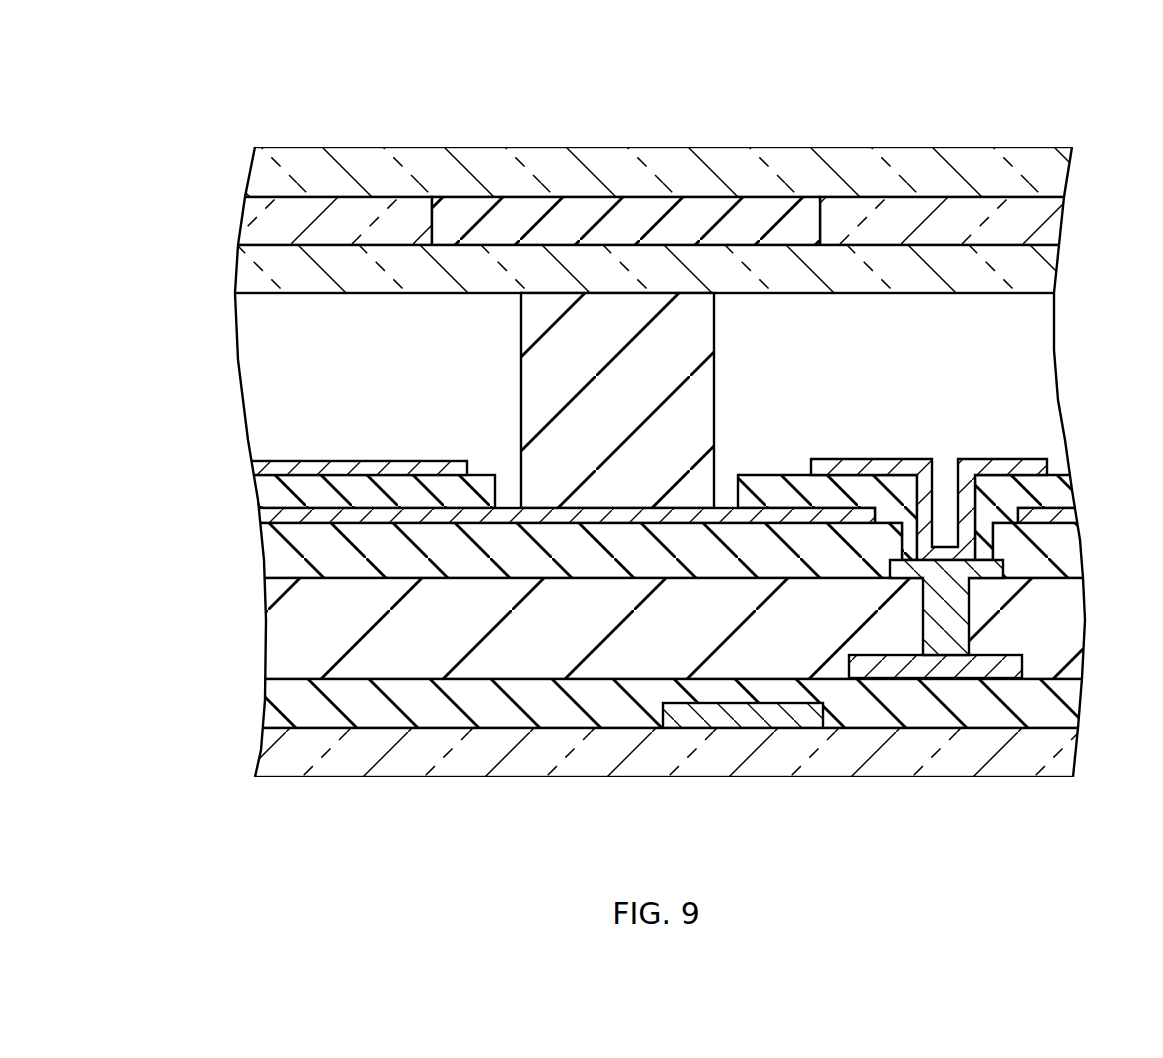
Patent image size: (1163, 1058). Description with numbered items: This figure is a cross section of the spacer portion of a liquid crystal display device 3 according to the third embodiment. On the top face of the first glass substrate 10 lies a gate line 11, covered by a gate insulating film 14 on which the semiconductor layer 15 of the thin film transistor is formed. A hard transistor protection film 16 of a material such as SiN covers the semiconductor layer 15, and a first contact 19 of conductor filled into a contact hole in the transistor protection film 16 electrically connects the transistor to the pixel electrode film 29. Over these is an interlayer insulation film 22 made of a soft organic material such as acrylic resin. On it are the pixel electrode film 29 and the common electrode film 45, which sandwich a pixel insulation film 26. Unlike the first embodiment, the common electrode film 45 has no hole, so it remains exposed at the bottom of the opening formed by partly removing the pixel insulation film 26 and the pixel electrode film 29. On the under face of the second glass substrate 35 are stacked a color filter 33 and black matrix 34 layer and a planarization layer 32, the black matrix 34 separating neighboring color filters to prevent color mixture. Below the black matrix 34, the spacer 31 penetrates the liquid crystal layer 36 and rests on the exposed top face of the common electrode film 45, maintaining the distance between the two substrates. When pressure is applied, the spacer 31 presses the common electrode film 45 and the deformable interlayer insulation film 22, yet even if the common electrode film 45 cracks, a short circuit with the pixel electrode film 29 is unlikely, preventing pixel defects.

The liquid crystal display device 3 is at (1060, 88).
The first glass substrate 10 is at (1070, 748).
The gate line 11 is at (693, 717).
The gate insulating film 14 is at (1073, 700).
The semiconductor layer 15 is at (975, 662).
The transistor protection film 16 is at (290, 617).
The first contact 19 is at (953, 640).
The interlayer insulation film 22 is at (272, 555).
The pixel insulation film 26 is at (270, 487).
The pixel electrode film 29 is at (257, 465).
The spacer 31 is at (553, 318).
The planarization layer 32 is at (1038, 270).
The color filter 33 is at (241, 228).
The black matrix 34 is at (672, 222).
The second glass substrate 35 is at (1052, 173).
The liquid crystal layer 36 is at (243, 351).
The common electrode film 45 is at (265, 515).